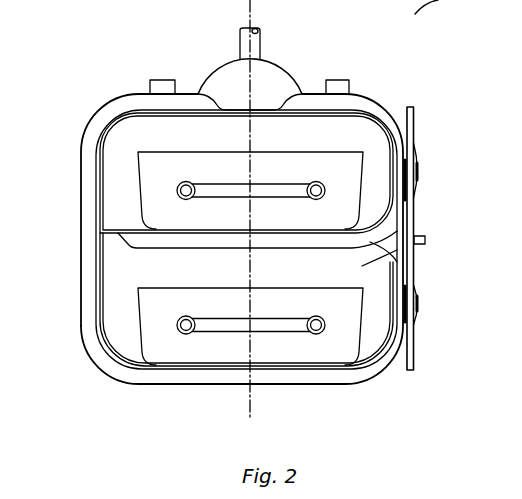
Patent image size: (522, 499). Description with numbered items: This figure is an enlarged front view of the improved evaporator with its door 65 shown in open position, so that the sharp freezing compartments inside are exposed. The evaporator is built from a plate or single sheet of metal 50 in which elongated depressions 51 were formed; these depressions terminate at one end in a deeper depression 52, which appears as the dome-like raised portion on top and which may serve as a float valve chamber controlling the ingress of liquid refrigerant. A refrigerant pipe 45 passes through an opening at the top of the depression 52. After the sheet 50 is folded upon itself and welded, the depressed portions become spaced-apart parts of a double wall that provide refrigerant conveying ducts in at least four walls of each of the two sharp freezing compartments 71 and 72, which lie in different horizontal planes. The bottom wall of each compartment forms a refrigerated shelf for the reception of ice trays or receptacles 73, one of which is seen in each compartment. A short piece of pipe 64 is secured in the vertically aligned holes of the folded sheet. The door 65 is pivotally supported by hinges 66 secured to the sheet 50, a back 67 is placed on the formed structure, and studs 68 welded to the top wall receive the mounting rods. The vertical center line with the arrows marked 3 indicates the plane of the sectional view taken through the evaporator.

The section line 3- 3 is at (250, 10).
The refrigerant pipe 45 is at (261, 43).
The plate or single sheet of metal 50 is at (232, 230).
The elongated depressions 51 is at (85, 147).
The depression 52 is at (275, 77).
The short piece of pipe 64 is at (382, 254).
The door 65 is at (415, 124).
The hinges 66 is at (420, 174).
The back 67 is at (120, 134).
The studs 68 is at (163, 85).
The sharp freezing compartment 71 is at (110, 191).
The sharp freezing compartment 72 is at (115, 272).
The ice trays or receptacles 73 is at (178, 163).